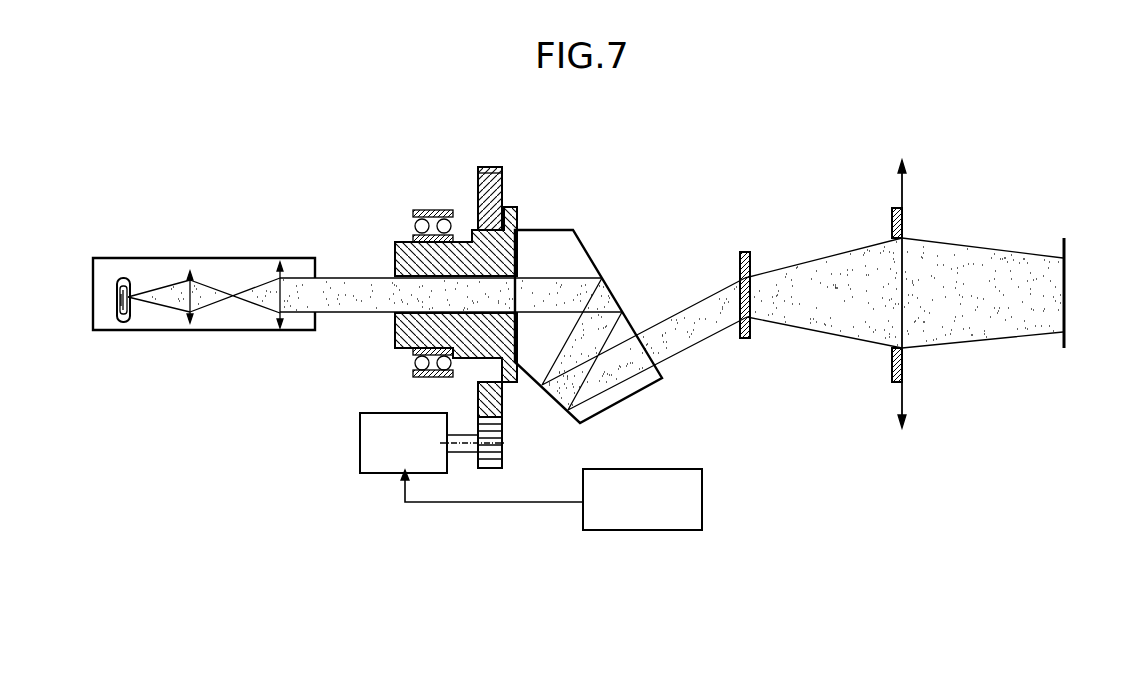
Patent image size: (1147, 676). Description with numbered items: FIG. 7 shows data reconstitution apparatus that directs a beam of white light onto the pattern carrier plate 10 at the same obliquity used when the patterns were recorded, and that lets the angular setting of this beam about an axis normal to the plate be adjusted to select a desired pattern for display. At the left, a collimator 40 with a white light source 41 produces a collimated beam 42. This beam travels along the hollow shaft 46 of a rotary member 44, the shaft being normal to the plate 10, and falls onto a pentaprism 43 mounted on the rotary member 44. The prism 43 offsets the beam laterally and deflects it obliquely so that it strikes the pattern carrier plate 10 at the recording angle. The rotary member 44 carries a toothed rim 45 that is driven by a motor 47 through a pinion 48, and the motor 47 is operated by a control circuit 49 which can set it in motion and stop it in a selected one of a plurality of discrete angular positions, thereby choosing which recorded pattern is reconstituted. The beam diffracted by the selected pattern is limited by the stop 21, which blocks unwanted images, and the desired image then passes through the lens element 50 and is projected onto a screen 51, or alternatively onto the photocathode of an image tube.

The pattern carrier plate 10 is at (746, 252).
The stop 21 is at (892, 218).
The collimator 40 is at (205, 252).
The white light source 41 is at (130, 287).
The collimated beam 42 is at (346, 279).
The pentaprism 43 is at (573, 237).
The rotary member 44 is at (397, 345).
The toothed rim 45 is at (497, 405).
The hollow shaft 46 is at (395, 317).
The motor 47 is at (402, 456).
The pinion 48 is at (499, 440).
The control circuit 49 is at (702, 502).
The lens 50 is at (903, 392).
The screen 51 is at (1066, 302).